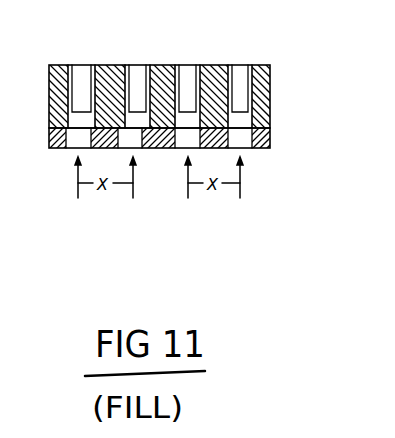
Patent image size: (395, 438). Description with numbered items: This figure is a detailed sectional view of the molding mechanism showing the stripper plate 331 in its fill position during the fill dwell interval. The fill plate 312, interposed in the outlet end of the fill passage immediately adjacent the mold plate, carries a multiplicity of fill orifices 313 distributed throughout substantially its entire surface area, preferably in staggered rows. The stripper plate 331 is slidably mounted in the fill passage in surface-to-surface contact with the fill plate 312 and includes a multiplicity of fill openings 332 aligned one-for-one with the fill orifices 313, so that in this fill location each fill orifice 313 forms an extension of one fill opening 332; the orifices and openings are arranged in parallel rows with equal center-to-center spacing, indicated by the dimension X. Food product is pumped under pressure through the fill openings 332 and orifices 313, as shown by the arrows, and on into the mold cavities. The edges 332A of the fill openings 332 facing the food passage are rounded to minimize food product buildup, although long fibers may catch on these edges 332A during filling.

The fill plate 312 is at (272, 100).
The fill orifices 313 is at (192, 63).
The stripper plate 331 is at (273, 135).
The fill openings 332 is at (178, 150).
The edges of fill openings 332A is at (253, 150).